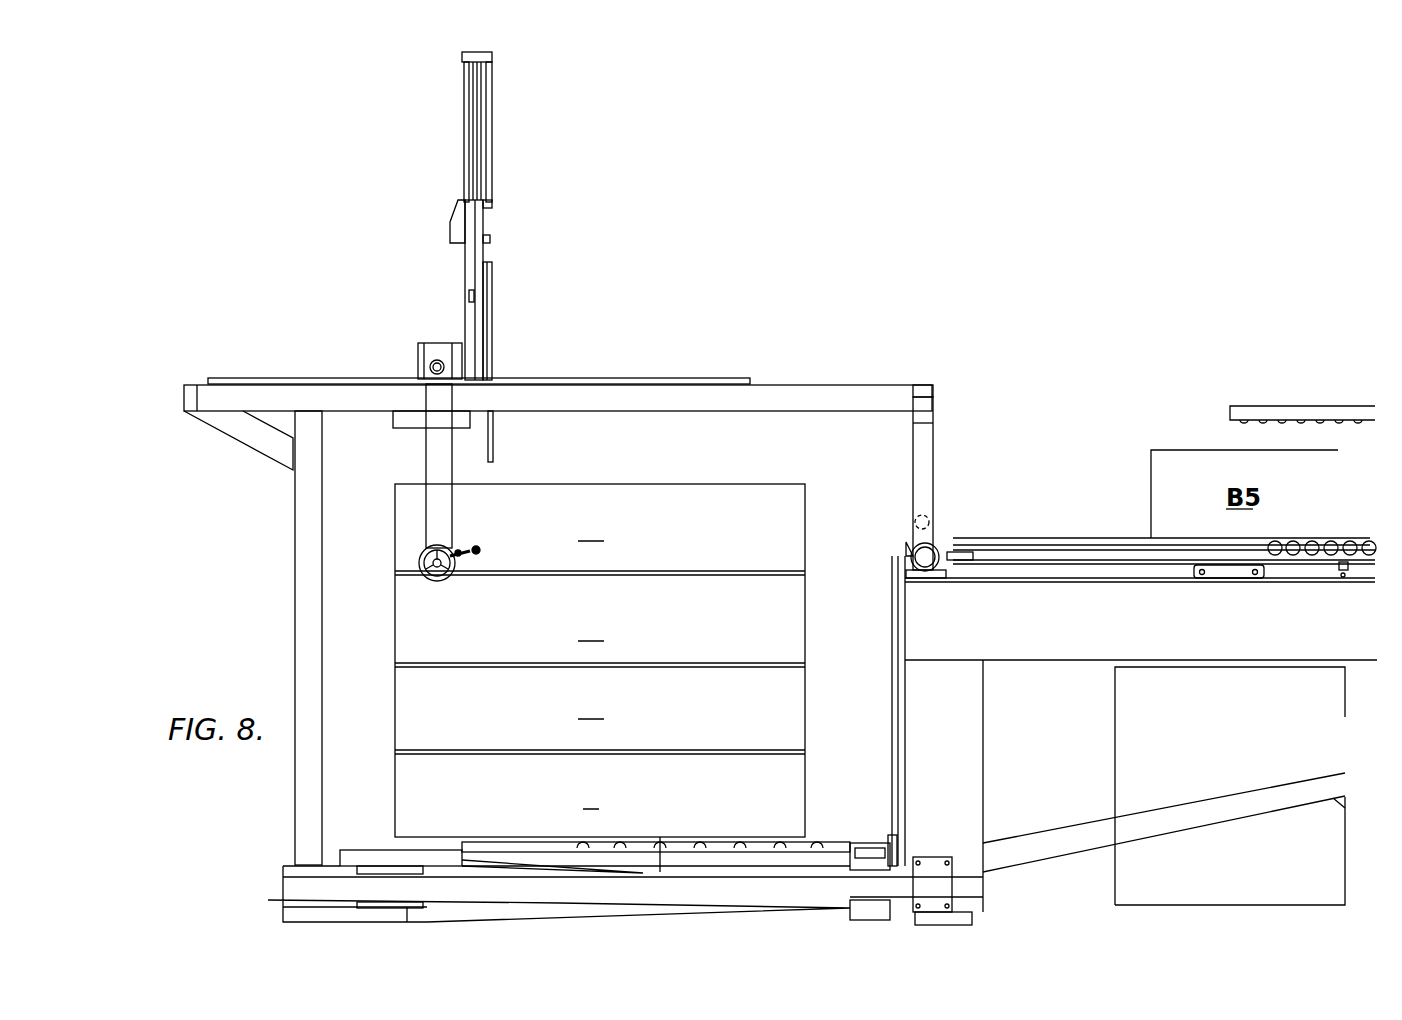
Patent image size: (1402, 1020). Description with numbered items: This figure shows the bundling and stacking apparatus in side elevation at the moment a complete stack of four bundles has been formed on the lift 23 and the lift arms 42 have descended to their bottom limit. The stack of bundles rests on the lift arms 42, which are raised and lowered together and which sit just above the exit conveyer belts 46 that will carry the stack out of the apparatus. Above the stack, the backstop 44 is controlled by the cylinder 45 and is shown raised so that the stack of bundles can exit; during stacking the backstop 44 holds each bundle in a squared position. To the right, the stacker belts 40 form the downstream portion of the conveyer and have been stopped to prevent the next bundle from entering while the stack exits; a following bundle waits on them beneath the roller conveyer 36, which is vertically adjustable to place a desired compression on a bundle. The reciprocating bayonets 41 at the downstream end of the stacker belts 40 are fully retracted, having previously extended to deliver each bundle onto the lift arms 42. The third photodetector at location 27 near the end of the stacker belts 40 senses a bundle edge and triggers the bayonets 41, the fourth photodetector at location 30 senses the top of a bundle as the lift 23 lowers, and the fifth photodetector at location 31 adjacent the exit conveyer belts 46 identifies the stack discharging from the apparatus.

The lift 23 is at (183, 650).
The third detector location 27 is at (924, 514).
The fourth detector location 30 is at (893, 567).
The fifth detector location 31 is at (290, 851).
The roller conveyer 36 is at (1284, 407).
The stacker belts 40 is at (1081, 538).
The reciprocating bayonets 41 is at (953, 550).
The lift arms 42 is at (375, 857).
The backstop 44 is at (494, 347).
The cylinder 45 is at (490, 112).
The conveyer belts 46 is at (841, 838).